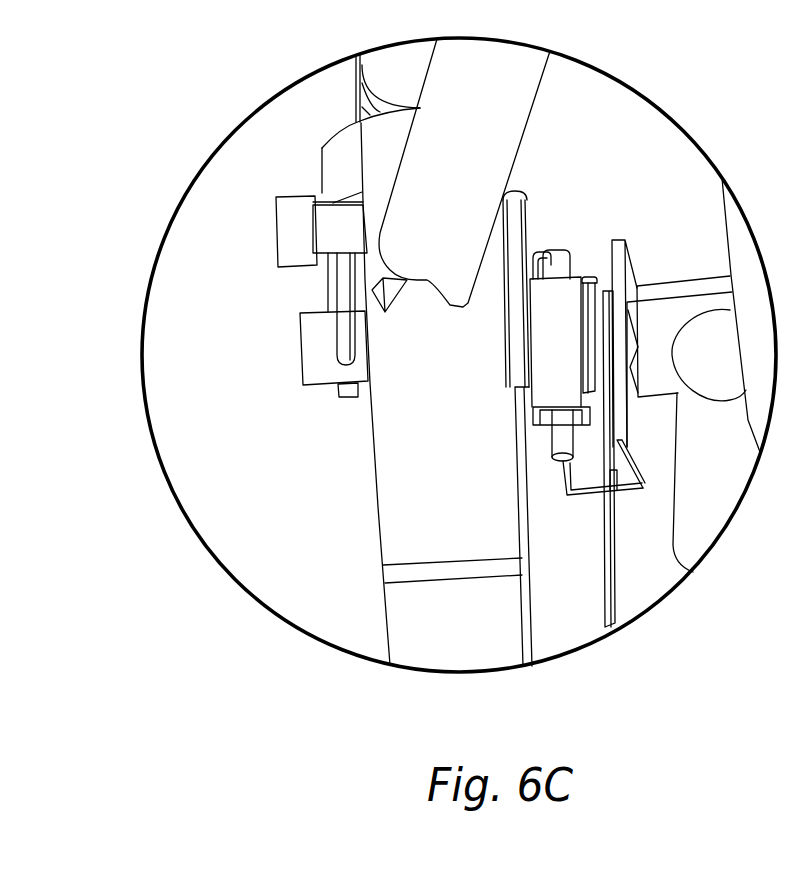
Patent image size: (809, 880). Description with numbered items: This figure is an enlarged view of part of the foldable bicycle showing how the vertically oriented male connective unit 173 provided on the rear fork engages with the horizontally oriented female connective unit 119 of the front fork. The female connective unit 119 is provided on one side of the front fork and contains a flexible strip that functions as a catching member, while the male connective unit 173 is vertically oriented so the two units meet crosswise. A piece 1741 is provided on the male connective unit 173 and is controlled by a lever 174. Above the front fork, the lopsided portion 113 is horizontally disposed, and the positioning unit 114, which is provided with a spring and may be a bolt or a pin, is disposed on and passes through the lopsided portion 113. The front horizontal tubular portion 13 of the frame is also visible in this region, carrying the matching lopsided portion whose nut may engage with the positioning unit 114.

The front horizontal tubular portion 13 is at (503, 127).
The lopsided portion 113 is at (388, 134).
The positioning unit 114 is at (287, 228).
The female connective unit 119 is at (552, 293).
The male connective unit 173 is at (558, 438).
The lever 174 is at (615, 568).
The piece 1741 is at (593, 278).